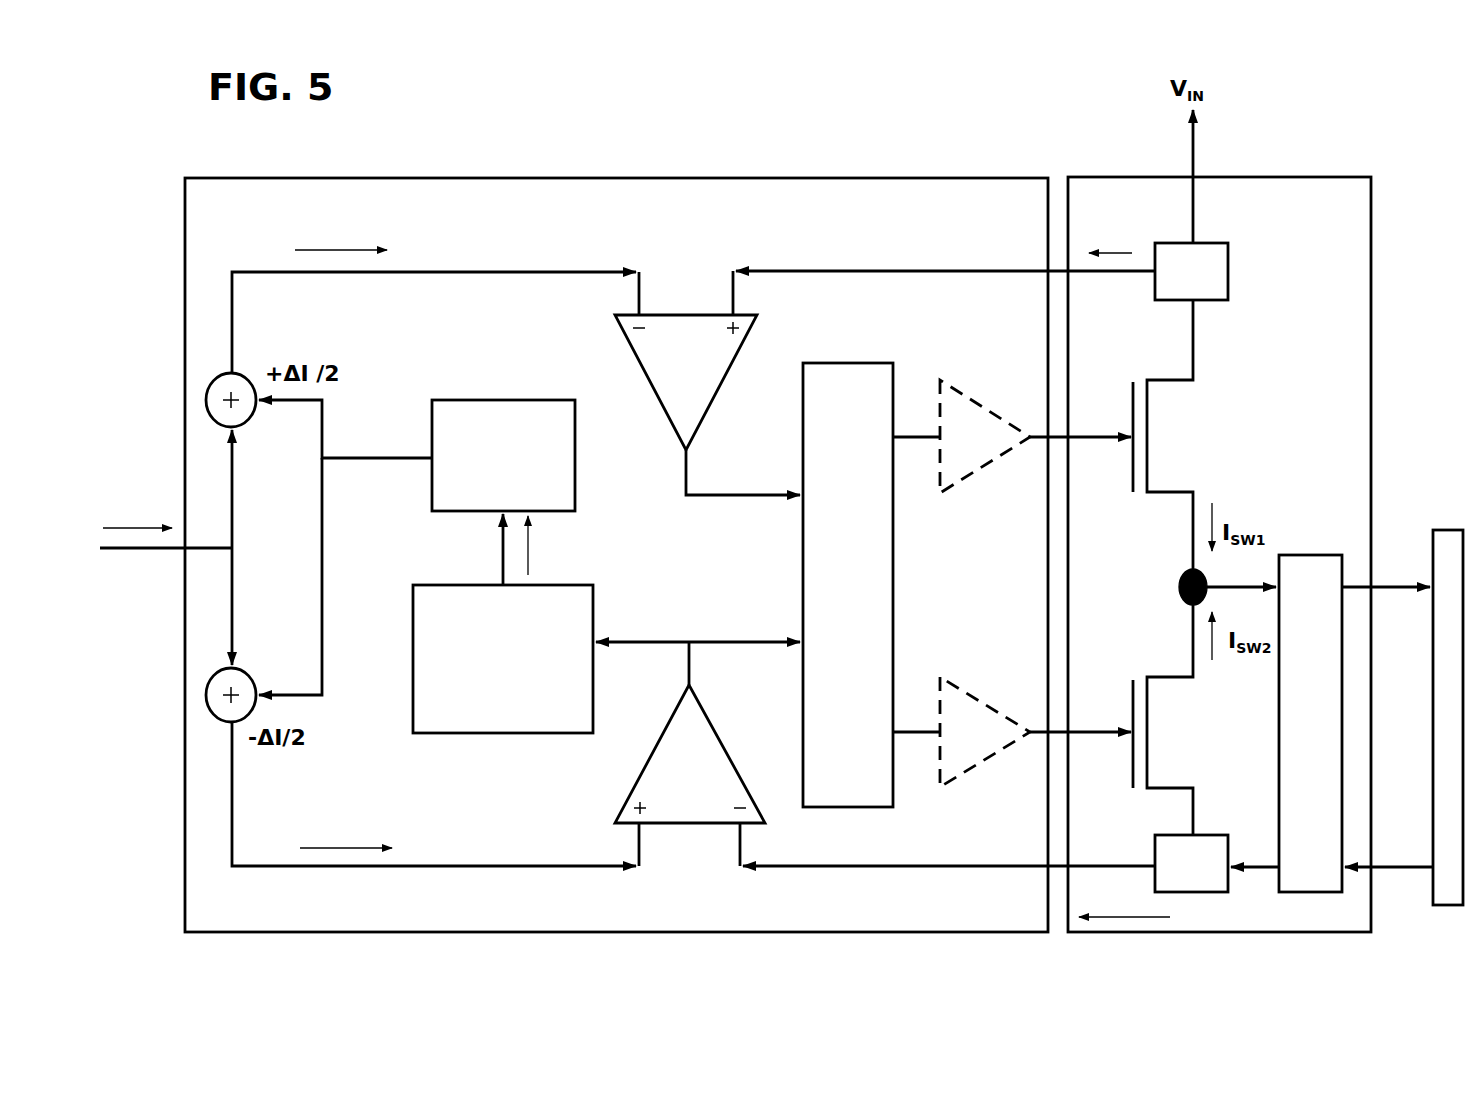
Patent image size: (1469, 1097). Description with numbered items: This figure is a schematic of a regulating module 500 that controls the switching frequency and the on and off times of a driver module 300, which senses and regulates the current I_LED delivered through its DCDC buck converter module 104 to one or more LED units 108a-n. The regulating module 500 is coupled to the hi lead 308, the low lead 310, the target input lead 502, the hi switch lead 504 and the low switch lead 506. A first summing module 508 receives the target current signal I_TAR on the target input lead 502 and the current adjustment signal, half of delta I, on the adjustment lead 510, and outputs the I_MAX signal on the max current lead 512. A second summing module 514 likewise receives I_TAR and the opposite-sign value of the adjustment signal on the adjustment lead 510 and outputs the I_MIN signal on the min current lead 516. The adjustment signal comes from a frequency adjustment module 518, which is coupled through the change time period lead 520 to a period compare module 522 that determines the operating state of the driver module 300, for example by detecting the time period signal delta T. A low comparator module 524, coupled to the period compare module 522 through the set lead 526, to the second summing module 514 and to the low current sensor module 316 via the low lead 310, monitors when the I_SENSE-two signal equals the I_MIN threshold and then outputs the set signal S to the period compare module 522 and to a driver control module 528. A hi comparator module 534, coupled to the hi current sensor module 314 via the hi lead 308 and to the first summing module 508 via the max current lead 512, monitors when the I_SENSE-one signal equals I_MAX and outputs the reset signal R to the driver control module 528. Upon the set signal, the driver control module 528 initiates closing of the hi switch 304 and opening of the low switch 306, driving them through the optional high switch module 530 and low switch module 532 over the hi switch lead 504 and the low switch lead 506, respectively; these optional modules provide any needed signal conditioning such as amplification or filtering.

The regulating module 500 is at (616, 555).
The driver module 300 is at (1219, 554).
The target input lead 502 is at (148, 535).
The first summing module 508 is at (235, 410).
The adjustment lead 510 is at (385, 457).
The max current lead 512 is at (258, 260).
The second summing module 514 is at (238, 675).
The min current lead 516 is at (220, 828).
The frequency adjustment module 518 is at (503, 455).
The change time period lead 520 is at (512, 570).
The period compare module 522 is at (503, 659).
The low comparator module 524 is at (690, 732).
The set lead 526 is at (682, 657).
The driver control module 528 is at (935, 327).
The high switch module 530 is at (961, 436).
The low switch module 532 is at (961, 732).
The hi comparator module 534 is at (707, 405).
The hi switch lead 504 is at (1099, 418).
The low switch lead 506 is at (1095, 742).
The hi switch 304 is at (1165, 434).
The low switch 306 is at (1165, 720).
The hi lead 308 is at (1128, 267).
The low lead 310 is at (1127, 870).
The hi current sensor module 314 is at (1191, 271).
The low current sensor module 316 is at (1191, 863).
The DCDC buck converter module 104 is at (1274, 723).
The LED units 108a-n is at (1402, 717).